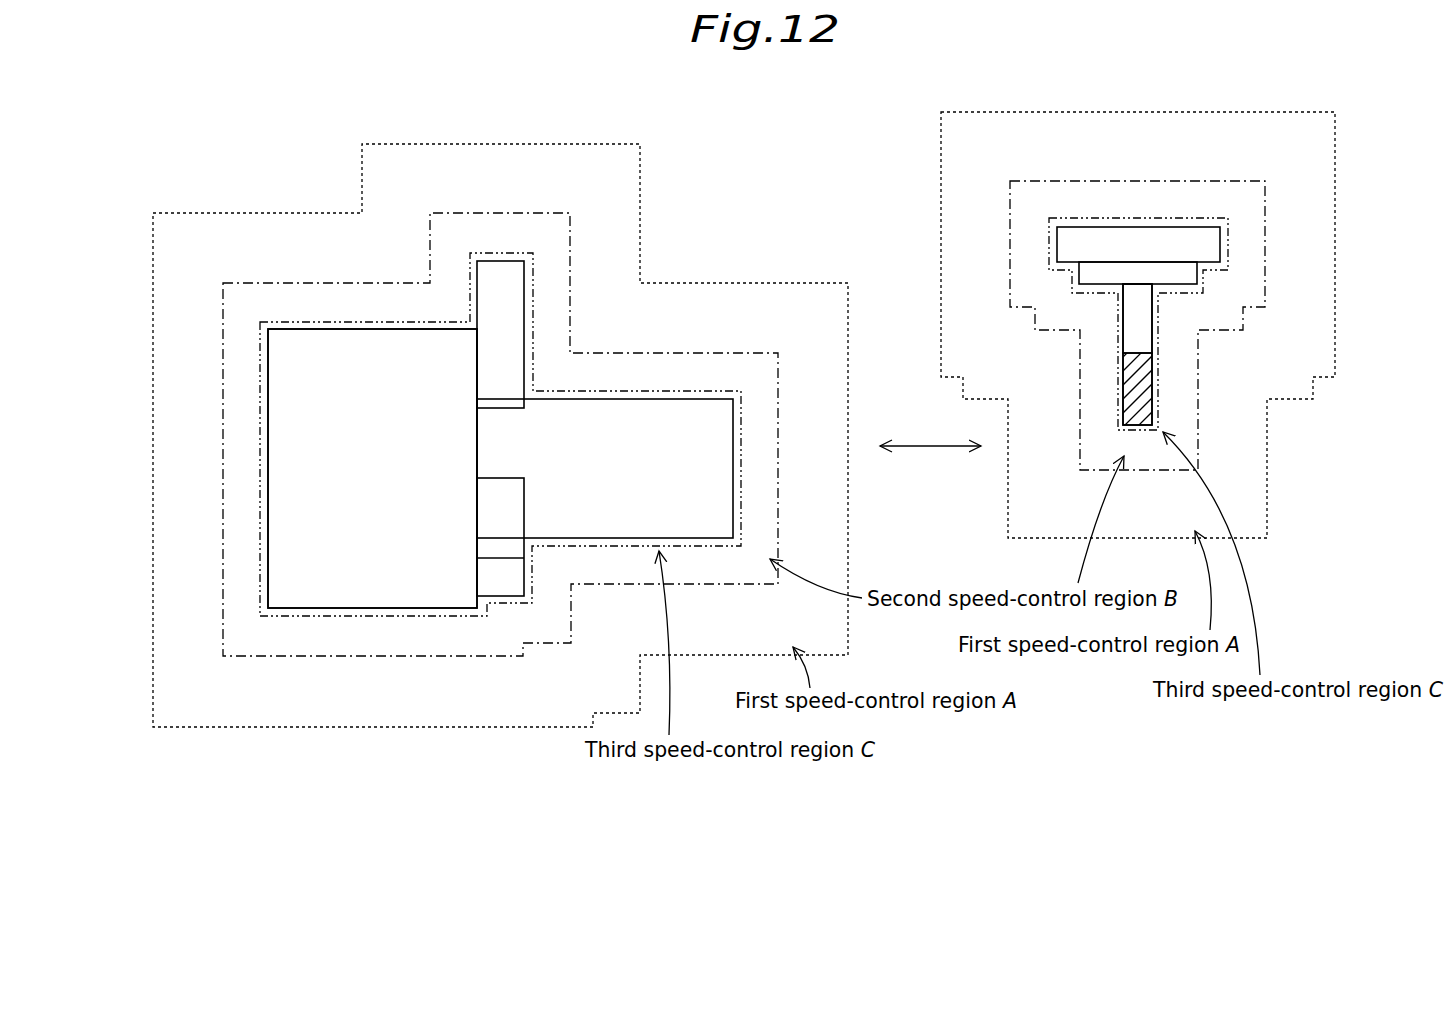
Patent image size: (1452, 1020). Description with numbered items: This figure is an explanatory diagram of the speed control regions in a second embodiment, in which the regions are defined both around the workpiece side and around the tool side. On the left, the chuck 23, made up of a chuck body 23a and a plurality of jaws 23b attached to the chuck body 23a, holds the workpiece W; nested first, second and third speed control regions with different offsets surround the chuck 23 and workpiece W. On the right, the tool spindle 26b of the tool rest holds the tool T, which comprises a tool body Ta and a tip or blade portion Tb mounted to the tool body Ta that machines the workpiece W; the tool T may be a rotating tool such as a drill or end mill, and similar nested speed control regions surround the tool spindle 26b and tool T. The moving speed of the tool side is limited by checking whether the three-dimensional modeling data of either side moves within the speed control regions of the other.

The chuck 23 is at (286, 302).
The chuck body 23a is at (325, 335).
The jaws 23b is at (495, 270).
The workpiece W is at (662, 407).
The tool spindle 26b is at (1061, 244).
The tool T is at (1180, 379).
The tool body Ta is at (1147, 325).
The tip (blade portion) Tb is at (1148, 393).